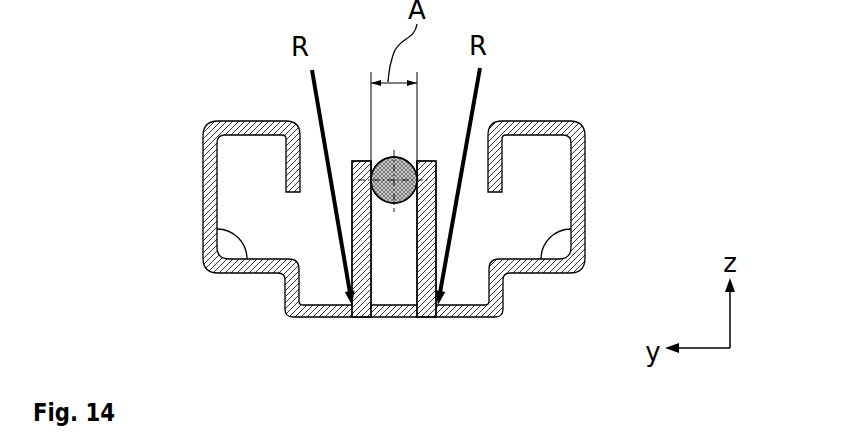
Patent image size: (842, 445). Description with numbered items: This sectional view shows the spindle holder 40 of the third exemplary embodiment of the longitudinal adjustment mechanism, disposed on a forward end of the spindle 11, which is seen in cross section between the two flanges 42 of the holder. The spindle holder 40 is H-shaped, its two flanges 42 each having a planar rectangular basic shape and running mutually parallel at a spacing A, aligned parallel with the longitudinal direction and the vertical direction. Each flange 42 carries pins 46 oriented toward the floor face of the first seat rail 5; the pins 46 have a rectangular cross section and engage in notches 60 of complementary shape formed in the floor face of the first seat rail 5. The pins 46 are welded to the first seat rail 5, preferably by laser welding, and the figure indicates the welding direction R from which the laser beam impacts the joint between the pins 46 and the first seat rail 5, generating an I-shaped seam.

The first seat rail 5 is at (527, 272).
The spindle 11 is at (402, 168).
The spindle holder 40 is at (430, 210).
The flanges 42 is at (360, 246).
The pins 46 is at (360, 313).
The notches 60 is at (372, 311).